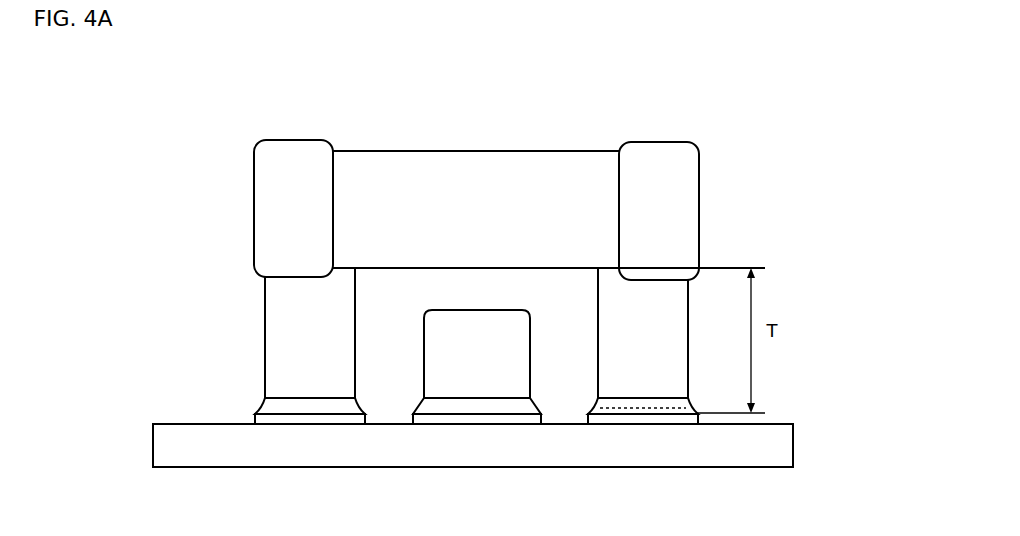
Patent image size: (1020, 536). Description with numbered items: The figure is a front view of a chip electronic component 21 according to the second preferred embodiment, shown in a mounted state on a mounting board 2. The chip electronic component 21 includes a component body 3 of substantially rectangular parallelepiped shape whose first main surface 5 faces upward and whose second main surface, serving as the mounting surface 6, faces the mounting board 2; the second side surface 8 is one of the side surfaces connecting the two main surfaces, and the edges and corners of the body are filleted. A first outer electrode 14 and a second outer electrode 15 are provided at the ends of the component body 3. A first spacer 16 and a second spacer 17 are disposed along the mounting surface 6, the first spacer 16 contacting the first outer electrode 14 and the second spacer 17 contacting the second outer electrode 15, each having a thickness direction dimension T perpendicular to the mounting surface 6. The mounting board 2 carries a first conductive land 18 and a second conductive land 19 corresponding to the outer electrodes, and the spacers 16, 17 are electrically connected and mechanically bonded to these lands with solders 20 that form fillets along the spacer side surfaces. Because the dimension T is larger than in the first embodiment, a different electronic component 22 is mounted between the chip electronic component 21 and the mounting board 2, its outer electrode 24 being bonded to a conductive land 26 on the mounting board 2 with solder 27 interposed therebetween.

The mounting board 2 is at (785, 450).
The component body 3 is at (549, 174).
The first main surface 5 is at (561, 151).
The mounting surface 6 is at (387, 268).
The second side surface 8 is at (398, 157).
The first outer electrode 14 is at (265, 147).
The second outer electrode 15 is at (651, 152).
The first spacer 16 is at (275, 333).
The second spacer 17 is at (682, 332).
The first conductive land 18 is at (250, 417).
The second conductive land 19 is at (620, 422).
The solder 20 is at (268, 405).
The chip electronic component 21 is at (499, 170).
The different electronic component 22 is at (493, 407).
The outer electrode 24 is at (470, 393).
The conductive land 26 is at (427, 422).
The solder 27 is at (511, 411).